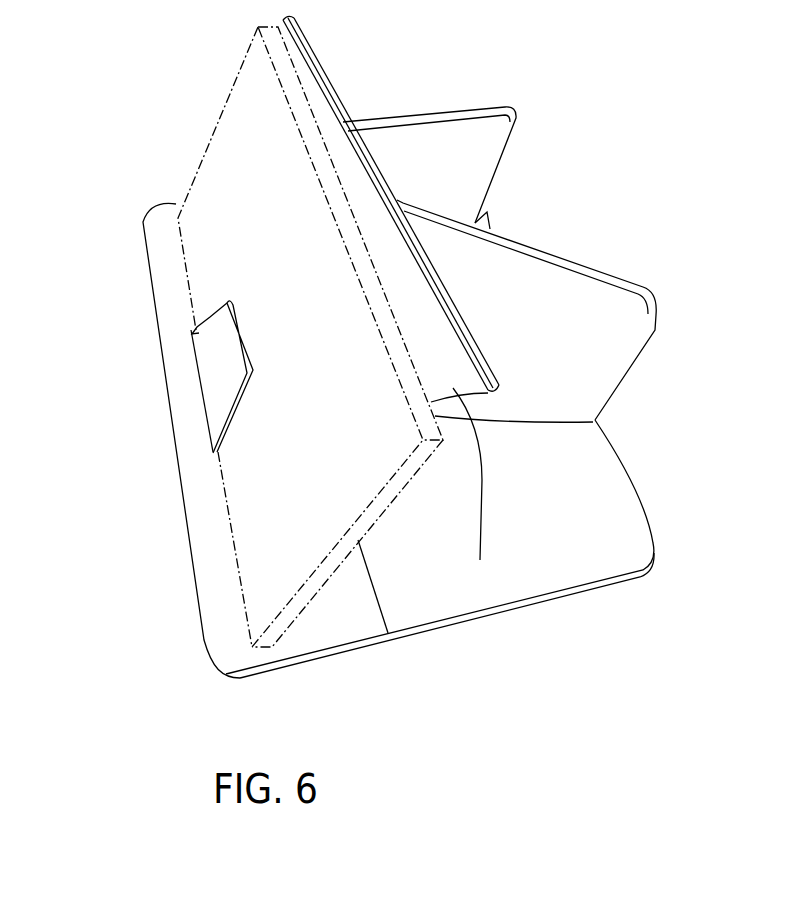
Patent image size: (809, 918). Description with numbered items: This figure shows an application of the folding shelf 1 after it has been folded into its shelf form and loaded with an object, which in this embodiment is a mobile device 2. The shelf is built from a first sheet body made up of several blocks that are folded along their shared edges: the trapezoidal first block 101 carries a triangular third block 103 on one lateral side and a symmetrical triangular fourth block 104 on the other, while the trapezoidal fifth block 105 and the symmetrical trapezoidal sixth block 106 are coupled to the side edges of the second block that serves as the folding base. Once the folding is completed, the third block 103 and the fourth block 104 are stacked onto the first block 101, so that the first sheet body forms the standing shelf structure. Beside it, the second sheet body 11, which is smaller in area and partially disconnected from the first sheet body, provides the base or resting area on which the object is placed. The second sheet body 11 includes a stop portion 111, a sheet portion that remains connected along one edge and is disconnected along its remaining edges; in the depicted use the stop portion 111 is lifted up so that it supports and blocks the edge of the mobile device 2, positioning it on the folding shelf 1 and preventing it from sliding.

The folding shelf 1 is at (697, 582).
The mobile device 2 is at (227, 135).
The second sheet body 11 is at (598, 517).
The first block 101 is at (480, 560).
The third block 103 is at (320, 62).
The fourth block 104 is at (490, 387).
The fifth block 105 is at (487, 155).
The sixth block 106 is at (613, 340).
The stop portion 111 is at (217, 398).